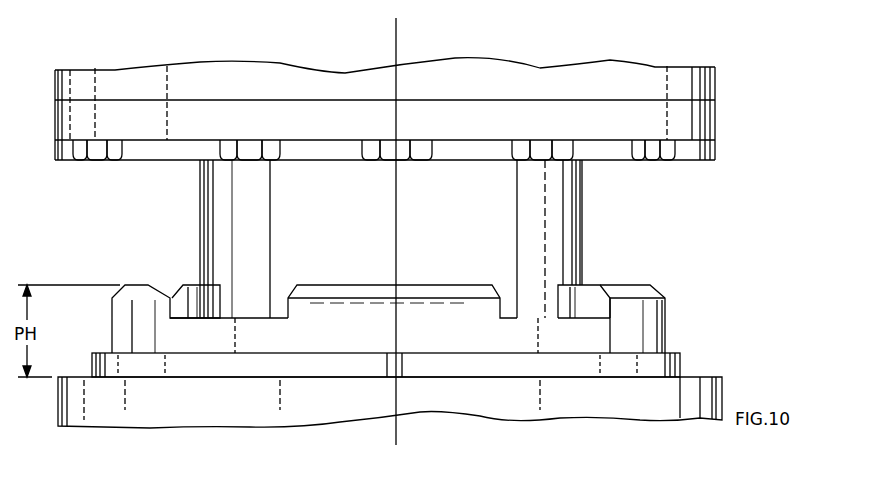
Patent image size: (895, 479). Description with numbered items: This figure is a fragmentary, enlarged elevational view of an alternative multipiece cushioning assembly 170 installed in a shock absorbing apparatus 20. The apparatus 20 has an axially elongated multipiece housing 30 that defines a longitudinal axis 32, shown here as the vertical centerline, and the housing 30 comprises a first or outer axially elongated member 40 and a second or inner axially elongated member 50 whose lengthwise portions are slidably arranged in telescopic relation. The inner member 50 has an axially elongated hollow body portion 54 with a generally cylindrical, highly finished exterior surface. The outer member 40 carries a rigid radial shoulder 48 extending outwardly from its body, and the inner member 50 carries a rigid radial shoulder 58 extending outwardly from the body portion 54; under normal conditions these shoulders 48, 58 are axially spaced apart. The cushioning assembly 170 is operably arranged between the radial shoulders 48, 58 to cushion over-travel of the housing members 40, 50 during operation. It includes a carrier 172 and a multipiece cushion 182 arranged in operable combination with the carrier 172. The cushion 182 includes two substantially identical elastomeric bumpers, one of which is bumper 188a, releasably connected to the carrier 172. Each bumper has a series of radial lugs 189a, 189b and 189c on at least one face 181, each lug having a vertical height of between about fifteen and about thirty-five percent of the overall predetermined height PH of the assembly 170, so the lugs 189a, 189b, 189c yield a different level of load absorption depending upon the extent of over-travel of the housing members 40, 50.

The shock absorbing apparatus 20 is at (128, 50).
The multipiece housing 30 is at (545, 52).
The longitudinal axis 32 is at (398, 30).
The first or outer axially elongated member 40 is at (42, 105).
The radial shoulder 48 is at (66, 125).
The second or inner axially elongated member 50 is at (530, 438).
The body portion 54 is at (570, 212).
The radial shoulder 58 is at (63, 400).
The cushioning assembly 170 is at (641, 286).
The carrier 172 is at (698, 360).
The face 181 is at (432, 283).
The multipiece cushion 182 is at (680, 296).
The elastomeric cushion or bumper 188a is at (434, 340).
The radial lug 189a is at (152, 283).
The radial lug 189b is at (367, 296).
The radial lug 189c is at (640, 284).